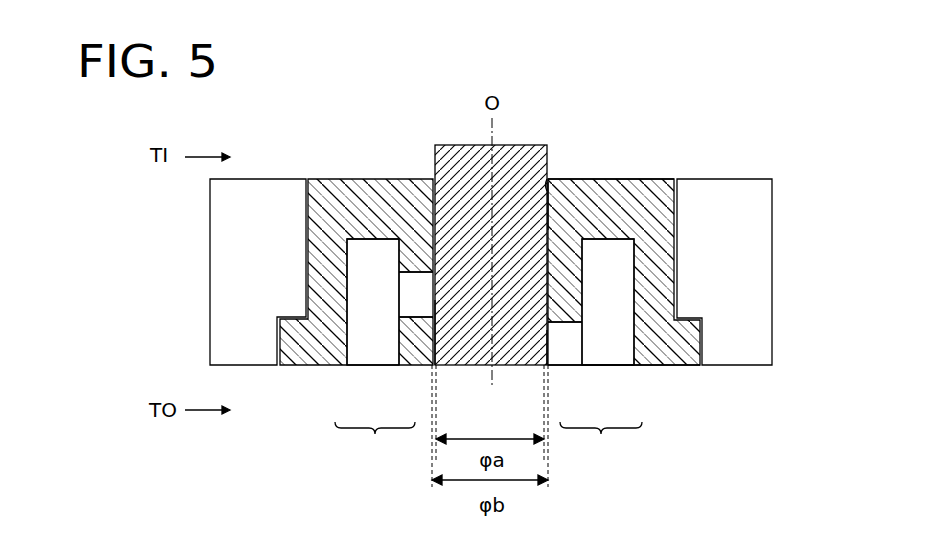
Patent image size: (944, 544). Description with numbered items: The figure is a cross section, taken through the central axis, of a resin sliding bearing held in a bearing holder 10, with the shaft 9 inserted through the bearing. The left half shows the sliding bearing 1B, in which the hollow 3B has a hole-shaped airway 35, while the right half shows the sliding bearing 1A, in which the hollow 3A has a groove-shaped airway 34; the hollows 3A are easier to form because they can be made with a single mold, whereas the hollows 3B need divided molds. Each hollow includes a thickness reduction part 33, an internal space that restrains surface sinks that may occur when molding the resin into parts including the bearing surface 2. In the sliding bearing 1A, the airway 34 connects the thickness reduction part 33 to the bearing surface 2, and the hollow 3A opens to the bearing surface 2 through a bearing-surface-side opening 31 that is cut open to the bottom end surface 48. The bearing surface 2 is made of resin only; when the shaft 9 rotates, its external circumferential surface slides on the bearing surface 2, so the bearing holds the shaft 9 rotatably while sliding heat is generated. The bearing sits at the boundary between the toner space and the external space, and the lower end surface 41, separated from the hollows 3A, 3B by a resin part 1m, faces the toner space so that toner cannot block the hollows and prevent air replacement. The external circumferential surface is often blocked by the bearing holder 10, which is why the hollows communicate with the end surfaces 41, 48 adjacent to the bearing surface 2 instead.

The bearing holder 10 is at (763, 248).
The sliding bearing 1B is at (328, 152).
The sliding bearing 1A is at (642, 150).
The shaft 9 is at (527, 146).
The bearing surface 2 is at (549, 182).
The lower end surface 41 is at (616, 178).
The resin part 1m is at (610, 218).
The thickness reduction part 33 is at (358, 342).
The airway 35 is at (417, 305).
The airway 34 is at (566, 343).
The bearing-surface-side opening 31 is at (434, 305).
The bottom end surface 48 is at (655, 364).
The hollow 3B is at (375, 442).
The hollow 3A is at (601, 442).